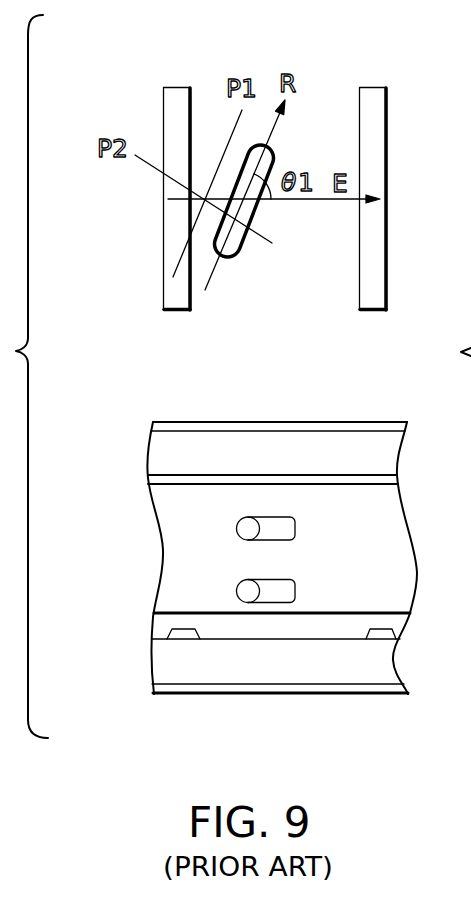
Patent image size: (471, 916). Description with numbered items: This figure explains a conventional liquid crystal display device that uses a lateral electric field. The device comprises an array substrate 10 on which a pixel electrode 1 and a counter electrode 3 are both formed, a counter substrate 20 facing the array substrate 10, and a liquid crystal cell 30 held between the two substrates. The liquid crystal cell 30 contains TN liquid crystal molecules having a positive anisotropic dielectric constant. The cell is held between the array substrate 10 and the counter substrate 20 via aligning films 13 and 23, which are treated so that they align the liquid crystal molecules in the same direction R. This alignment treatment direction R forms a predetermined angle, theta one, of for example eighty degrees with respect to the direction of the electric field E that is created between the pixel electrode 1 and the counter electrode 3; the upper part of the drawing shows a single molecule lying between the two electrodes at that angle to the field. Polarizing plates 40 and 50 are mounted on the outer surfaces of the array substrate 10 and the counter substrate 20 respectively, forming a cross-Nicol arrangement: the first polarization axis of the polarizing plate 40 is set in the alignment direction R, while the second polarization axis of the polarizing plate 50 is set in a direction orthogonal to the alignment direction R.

The pixel electrode 1 is at (177, 93).
The counter electrode 3 is at (373, 93).
The array substrate 10 is at (116, 663).
The aligning film 13 is at (154, 624).
The counter substrate 20 is at (152, 454).
The aligning film 23 is at (150, 484).
The liquid crystal cell 30 is at (163, 541).
The polarizing plate 40 is at (152, 692).
The polarizing plate 50 is at (152, 430).